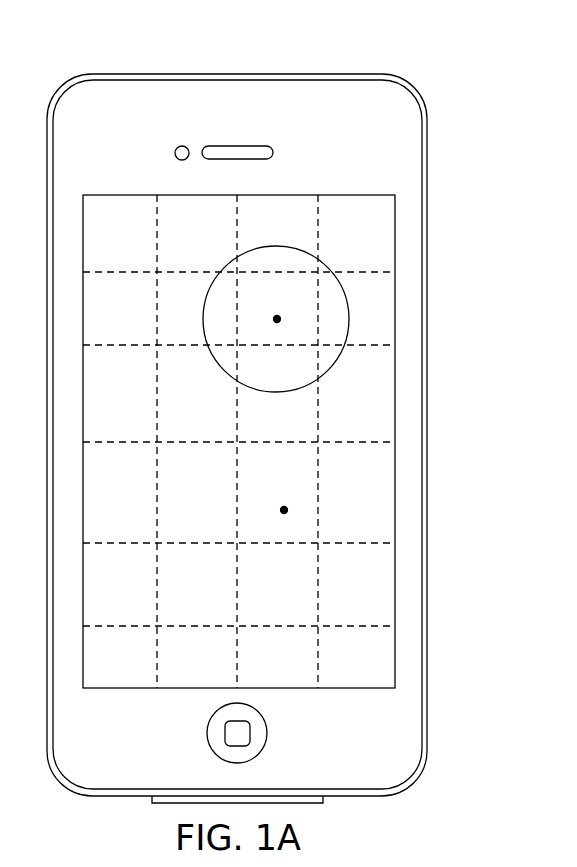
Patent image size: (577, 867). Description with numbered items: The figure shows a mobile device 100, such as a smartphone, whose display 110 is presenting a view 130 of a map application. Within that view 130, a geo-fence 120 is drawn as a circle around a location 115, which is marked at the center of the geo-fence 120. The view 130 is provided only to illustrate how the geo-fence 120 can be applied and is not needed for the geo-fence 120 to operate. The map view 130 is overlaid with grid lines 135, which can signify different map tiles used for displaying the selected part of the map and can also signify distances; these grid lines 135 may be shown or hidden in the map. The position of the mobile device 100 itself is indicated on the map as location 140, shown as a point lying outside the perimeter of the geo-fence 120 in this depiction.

The mobile device 100 is at (210, 74).
The display 110 is at (157, 688).
The location 115 is at (277, 319).
The geo-fence 120 is at (349, 326).
The view 130 is at (346, 482).
The grid lines 135 is at (358, 442).
The location of the mobile device 140 is at (284, 510).